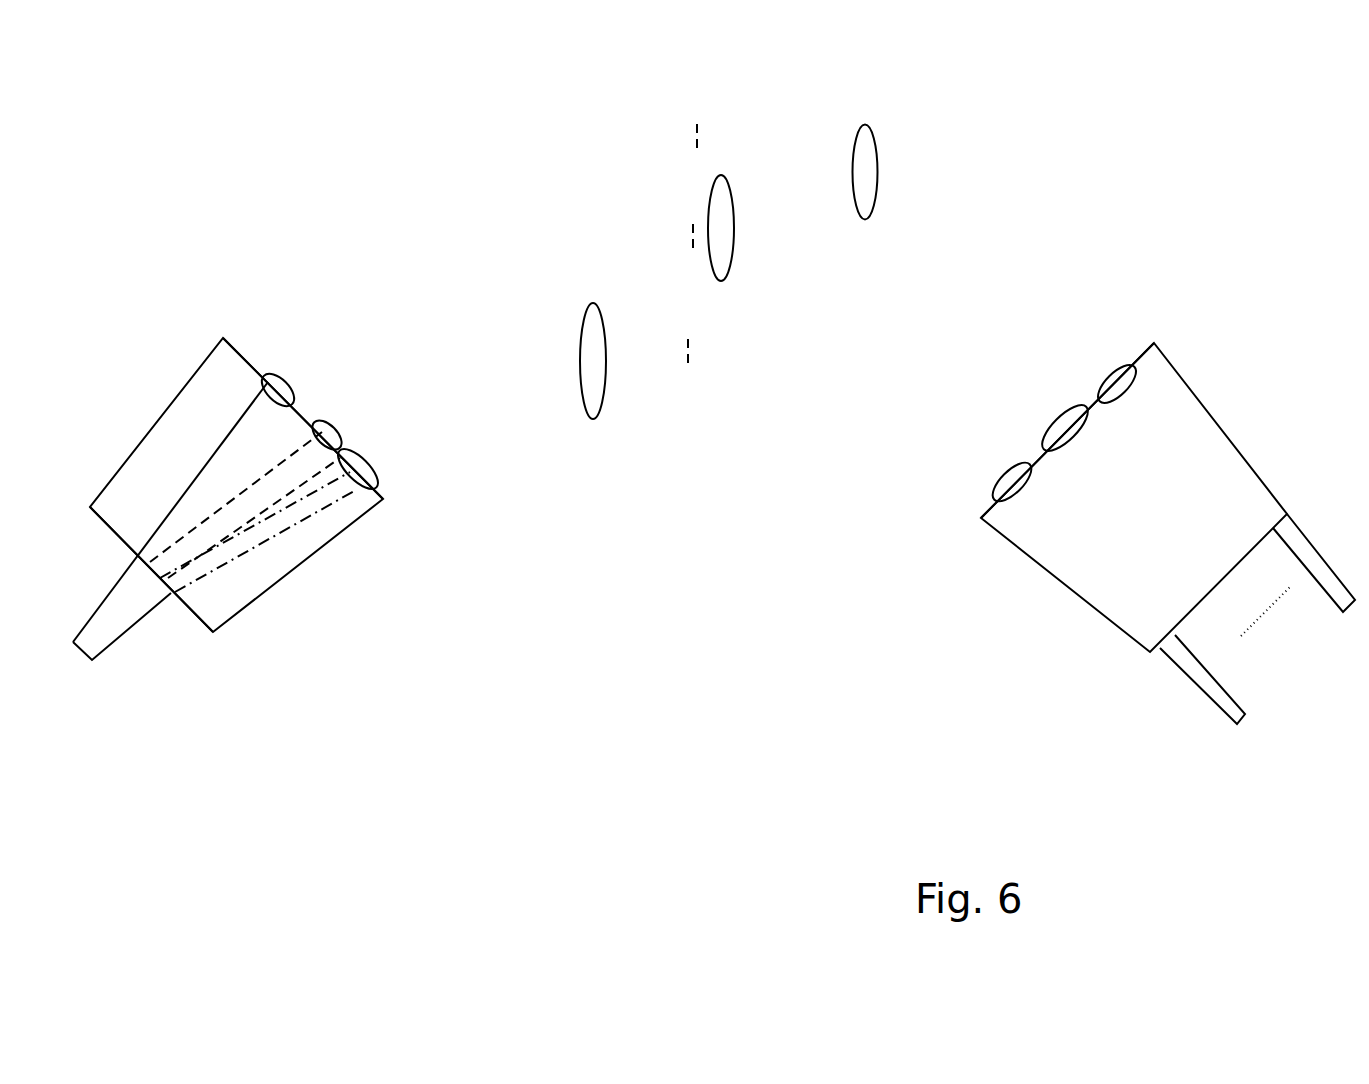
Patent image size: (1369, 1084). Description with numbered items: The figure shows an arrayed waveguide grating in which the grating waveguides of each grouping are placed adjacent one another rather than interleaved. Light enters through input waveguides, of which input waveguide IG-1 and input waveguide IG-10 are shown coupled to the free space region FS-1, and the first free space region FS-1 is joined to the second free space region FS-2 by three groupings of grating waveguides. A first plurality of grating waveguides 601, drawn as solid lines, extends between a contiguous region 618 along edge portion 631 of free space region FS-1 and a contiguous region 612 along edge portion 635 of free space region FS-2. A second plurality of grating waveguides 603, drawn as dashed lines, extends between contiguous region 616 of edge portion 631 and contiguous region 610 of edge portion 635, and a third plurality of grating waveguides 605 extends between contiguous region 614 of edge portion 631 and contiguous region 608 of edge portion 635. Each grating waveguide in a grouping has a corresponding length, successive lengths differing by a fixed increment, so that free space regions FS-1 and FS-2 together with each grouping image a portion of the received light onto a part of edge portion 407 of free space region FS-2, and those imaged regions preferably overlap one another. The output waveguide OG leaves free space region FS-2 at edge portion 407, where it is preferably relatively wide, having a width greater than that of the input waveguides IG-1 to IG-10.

The first plurality of grating waveguides 601 is at (875, 142).
The second plurality of grating waveguides 603 is at (732, 222).
The third plurality of grating waveguides 605 is at (595, 419).
The contiguous region 608 is at (380, 482).
The contiguous region 610 is at (322, 422).
The contiguous region 612 is at (268, 382).
The contiguous region 614 is at (994, 491).
The contiguous region 616 is at (1085, 427).
The contiguous region 618 is at (1124, 366).
The edge portion 631 is at (981, 518).
The edge portion 635 is at (223, 338).
The edge portion 407 is at (122, 543).
The free space region FS-1 is at (1087, 607).
The free space region FS-2 is at (273, 590).
The output waveguide OG is at (114, 636).
The input waveguide IG-1 is at (1217, 707).
The input waveguide IG-10 is at (1338, 583).